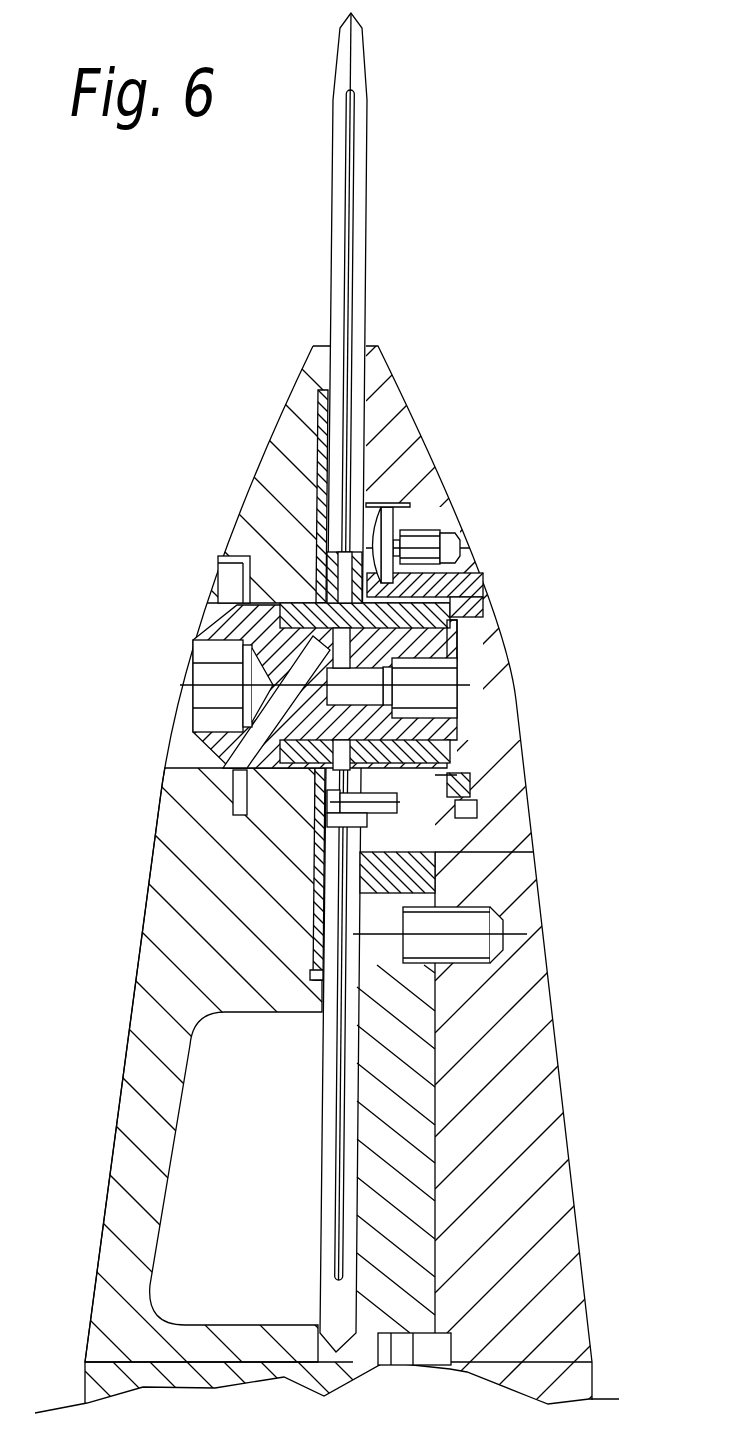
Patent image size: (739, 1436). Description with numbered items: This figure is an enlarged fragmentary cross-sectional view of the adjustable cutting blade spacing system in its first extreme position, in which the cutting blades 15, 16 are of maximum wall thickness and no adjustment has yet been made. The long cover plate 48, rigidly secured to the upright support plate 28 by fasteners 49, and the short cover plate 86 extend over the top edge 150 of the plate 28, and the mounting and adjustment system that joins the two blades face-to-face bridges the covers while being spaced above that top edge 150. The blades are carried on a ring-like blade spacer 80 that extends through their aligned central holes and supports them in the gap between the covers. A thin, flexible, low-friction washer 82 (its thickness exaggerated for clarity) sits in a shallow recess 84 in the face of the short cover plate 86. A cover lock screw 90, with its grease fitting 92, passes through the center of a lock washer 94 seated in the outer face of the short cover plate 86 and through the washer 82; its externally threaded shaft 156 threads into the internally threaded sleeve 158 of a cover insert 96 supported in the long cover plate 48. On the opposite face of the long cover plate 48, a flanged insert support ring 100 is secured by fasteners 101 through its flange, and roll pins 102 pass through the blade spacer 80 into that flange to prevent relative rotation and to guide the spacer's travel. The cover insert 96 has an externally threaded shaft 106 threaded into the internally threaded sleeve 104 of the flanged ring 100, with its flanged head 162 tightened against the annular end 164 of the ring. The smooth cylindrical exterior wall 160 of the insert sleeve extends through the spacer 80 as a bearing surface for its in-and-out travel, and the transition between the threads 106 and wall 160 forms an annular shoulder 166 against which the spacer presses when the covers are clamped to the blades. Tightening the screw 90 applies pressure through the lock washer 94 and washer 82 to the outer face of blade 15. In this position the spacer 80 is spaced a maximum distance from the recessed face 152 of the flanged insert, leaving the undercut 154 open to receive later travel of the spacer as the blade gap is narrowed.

The cutting blade 15 is at (360, 211).
The cutting blade 16 is at (332, 223).
The support plate 28 is at (368, 1131).
The long cover plate 48 is at (537, 967).
The fasteners 49 is at (473, 925).
The blade spacer 80 is at (327, 553).
The large flat washer 82 is at (317, 427).
The shallow recess 84 is at (395, 893).
The short cover plate 86 is at (150, 968).
The cover lock screw 90 is at (193, 756).
The grease fitting 92 is at (447, 676).
The lock washer 94 is at (247, 573).
The cover insert 96 is at (462, 548).
The flanged insert support ring 100 is at (440, 843).
The fasteners 101 is at (430, 528).
The roll pins 102 is at (447, 720).
The internally threaded sleeve 104 is at (450, 753).
The externally threaded shaft 106 is at (447, 817).
The top edge 150 is at (420, 855).
The recessed face 152 is at (380, 507).
The undercut 154 is at (393, 508).
The externally threaded shaft 156 is at (440, 610).
The internally threaded sleeve 158 is at (455, 638).
The cylindrical exterior wall 160 is at (250, 612).
The flanged head 162 is at (483, 583).
The annular end 164 is at (453, 790).
The annular shoulder 166 is at (330, 800).